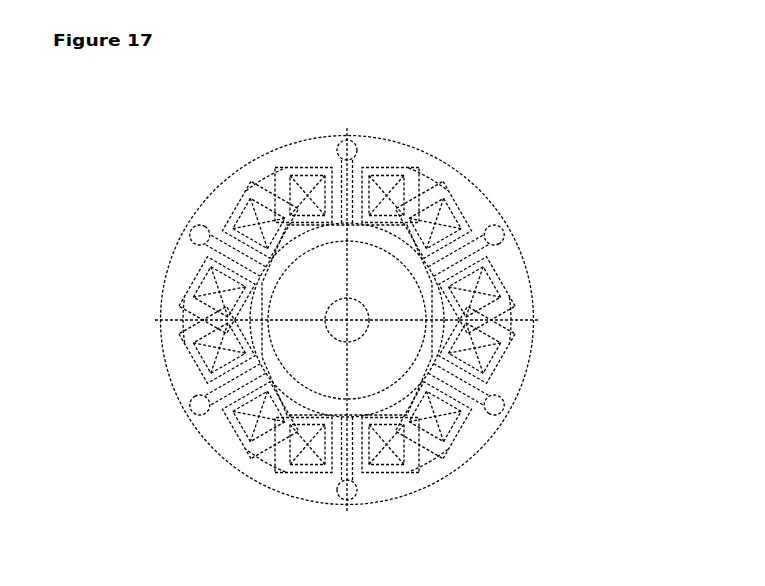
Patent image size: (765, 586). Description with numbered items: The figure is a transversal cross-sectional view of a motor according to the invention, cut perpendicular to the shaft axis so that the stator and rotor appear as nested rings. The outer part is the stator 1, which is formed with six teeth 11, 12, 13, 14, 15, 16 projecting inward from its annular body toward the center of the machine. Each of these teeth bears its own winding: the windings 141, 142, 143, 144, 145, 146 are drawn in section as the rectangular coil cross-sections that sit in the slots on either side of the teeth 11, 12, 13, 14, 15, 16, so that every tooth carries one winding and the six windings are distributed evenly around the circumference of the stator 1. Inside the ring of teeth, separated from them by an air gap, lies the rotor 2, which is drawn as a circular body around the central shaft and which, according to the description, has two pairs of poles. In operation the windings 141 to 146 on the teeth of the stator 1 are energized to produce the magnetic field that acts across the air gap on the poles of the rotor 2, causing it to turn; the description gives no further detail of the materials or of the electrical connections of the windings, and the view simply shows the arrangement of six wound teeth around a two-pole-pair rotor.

The stator 1 is at (447, 162).
The rotor 2 is at (405, 259).
The tooth 11 is at (522, 247).
The tooth 12 is at (512, 389).
The tooth 13 is at (303, 471).
The tooth 14 is at (187, 389).
The tooth 15 is at (189, 246).
The tooth 16 is at (338, 166).
The winding 141 is at (509, 257).
The winding 142 is at (489, 382).
The winding 143 is at (423, 451).
The winding 144 is at (208, 382).
The winding 145 is at (195, 257).
The winding 146 is at (291, 184).